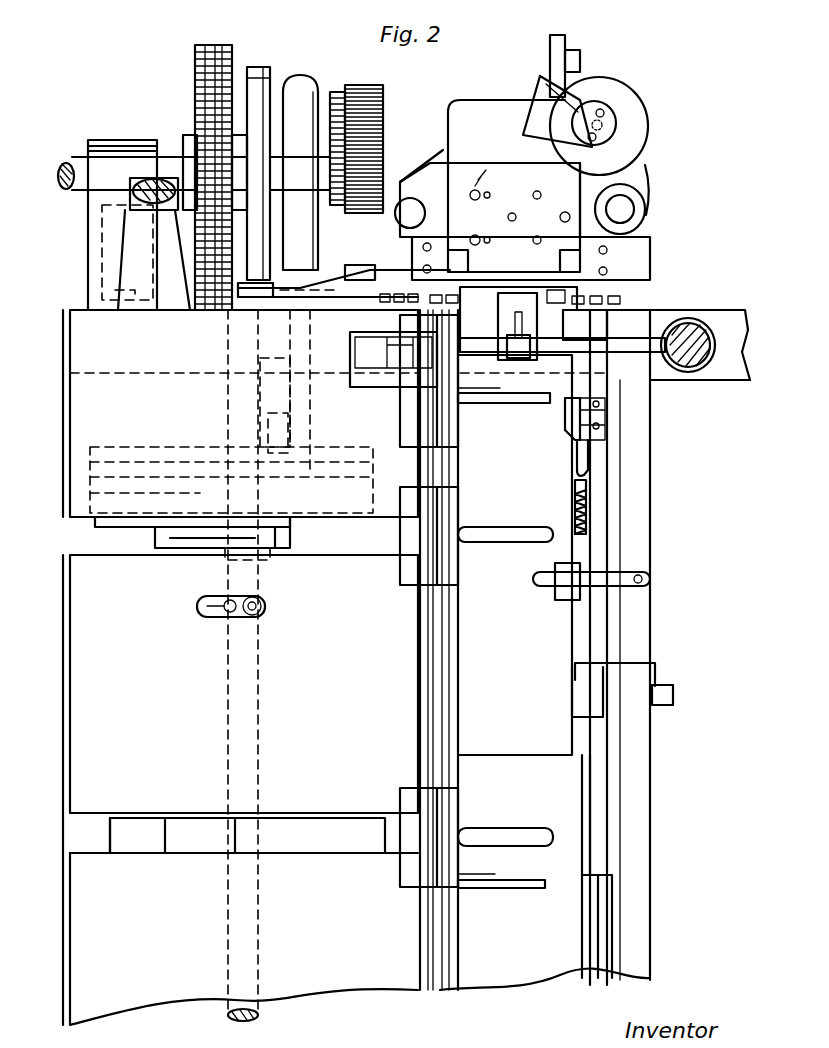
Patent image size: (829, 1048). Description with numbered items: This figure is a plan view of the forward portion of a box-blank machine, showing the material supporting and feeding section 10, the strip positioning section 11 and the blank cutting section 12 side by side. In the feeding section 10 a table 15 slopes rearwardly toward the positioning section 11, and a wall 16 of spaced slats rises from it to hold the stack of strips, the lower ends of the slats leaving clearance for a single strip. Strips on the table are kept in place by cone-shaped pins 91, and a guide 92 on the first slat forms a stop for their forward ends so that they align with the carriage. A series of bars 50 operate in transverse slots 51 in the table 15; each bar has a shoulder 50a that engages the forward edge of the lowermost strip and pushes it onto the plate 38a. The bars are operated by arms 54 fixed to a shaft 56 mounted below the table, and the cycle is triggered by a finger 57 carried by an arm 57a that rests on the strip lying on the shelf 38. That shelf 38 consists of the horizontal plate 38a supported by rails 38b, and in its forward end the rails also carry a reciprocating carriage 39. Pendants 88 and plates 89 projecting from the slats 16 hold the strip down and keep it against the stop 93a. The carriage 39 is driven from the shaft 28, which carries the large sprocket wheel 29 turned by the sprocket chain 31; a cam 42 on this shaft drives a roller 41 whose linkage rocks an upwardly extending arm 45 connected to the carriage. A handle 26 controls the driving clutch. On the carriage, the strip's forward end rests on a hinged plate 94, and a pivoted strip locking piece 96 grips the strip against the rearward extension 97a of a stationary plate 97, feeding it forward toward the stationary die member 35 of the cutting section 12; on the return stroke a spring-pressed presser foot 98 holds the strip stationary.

The material supporting and feeding section 10 is at (82, 934).
The strip positioning section 11 is at (668, 617).
The blank cutting section 12 is at (658, 203).
The table 15 is at (306, 704).
The wall 16 is at (448, 432).
The handle 26 is at (150, 185).
The shaft 28 is at (64, 190).
The large sprocket wheel 29 is at (185, 145).
The sprocket chain 31 is at (205, 77).
The stationary die member 35 is at (531, 221).
The shelf or frame 38 is at (512, 968).
The horizontally disposed plate 38a is at (542, 636).
The rails 38b is at (643, 790).
The reciprocating carriage 39 is at (597, 555).
The roller 41 is at (303, 80).
The cam 42 is at (258, 72).
The upwardly extending arm 45 is at (505, 290).
The bars 50 is at (333, 840).
The shoulder 50a is at (200, 840).
The slots 51 is at (94, 539).
The arms 54 is at (195, 535).
The shaft 56 is at (230, 1010).
The finger 57 is at (585, 670).
The arm 57a is at (672, 695).
The pendants 88 is at (520, 404).
The plates 89 is at (517, 542).
The cone-shaped pins 91 is at (265, 606).
The guide 92 is at (385, 388).
The stop 93a is at (585, 790).
The hinged plate 94 is at (570, 420).
The strip locking piece 96 is at (588, 480).
The stationary plate 97 is at (587, 341).
The rearward extension 97a is at (588, 450).
The presser foot 98 is at (512, 318).